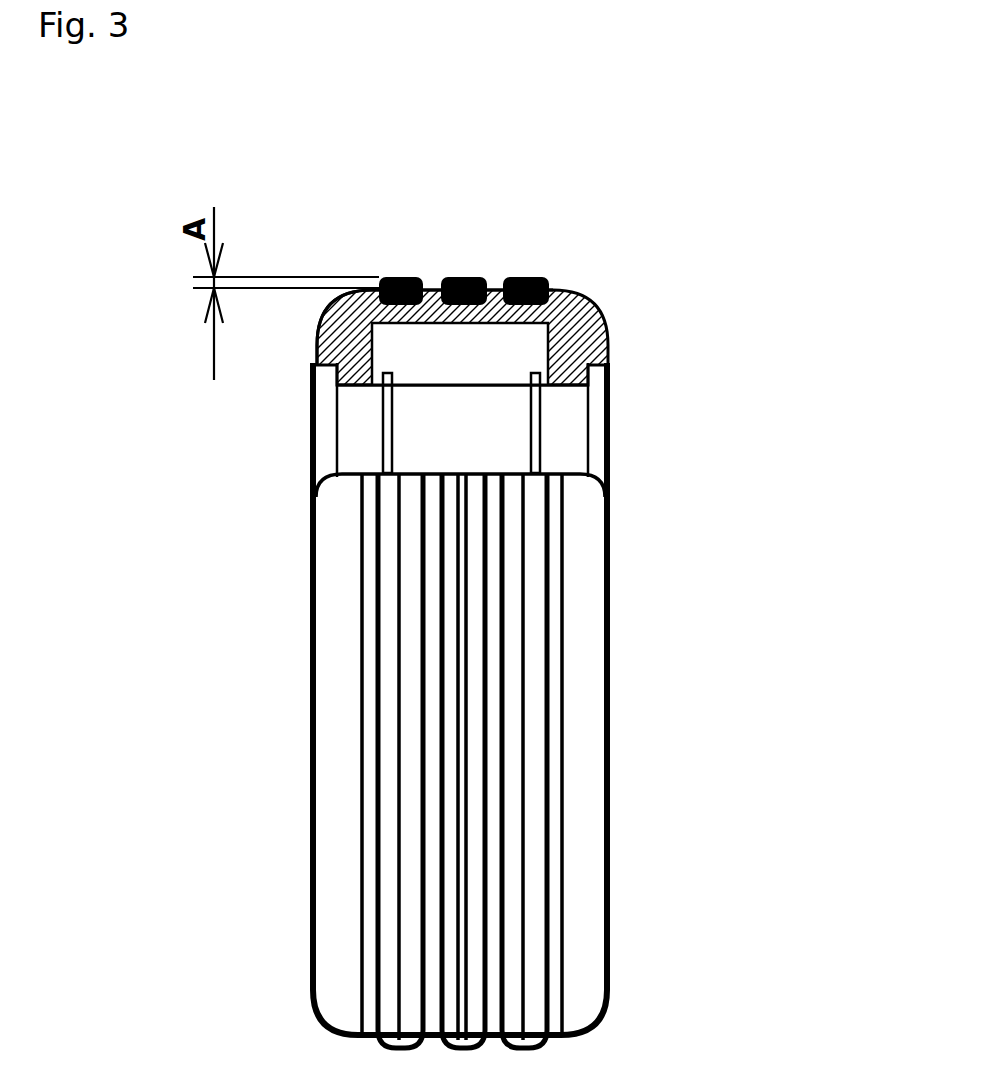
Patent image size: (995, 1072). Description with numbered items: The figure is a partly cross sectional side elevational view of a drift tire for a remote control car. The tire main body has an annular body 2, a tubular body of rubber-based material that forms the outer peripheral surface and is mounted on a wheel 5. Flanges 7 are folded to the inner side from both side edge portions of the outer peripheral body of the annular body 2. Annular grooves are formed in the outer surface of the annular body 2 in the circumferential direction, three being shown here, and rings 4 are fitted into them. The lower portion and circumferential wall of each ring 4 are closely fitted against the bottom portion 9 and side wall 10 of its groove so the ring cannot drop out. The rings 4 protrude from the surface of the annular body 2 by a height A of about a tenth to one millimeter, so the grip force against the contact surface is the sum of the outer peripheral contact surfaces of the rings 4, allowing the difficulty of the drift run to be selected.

The annular body 2 is at (593, 298).
The ring 4 is at (523, 277).
The wheel 5 is at (567, 430).
The flange 7 is at (333, 393).
The bottom portion 9 is at (313, 348).
The side wall 10 is at (557, 290).